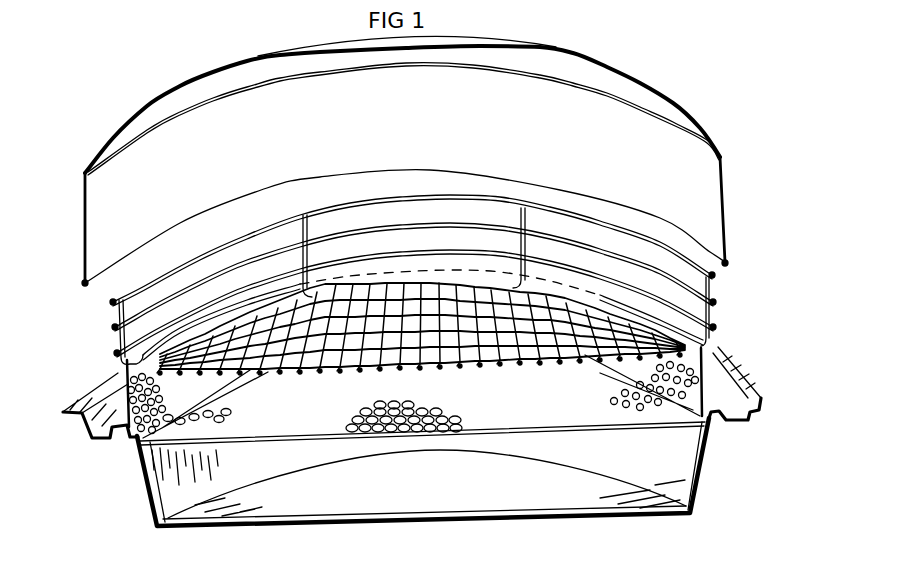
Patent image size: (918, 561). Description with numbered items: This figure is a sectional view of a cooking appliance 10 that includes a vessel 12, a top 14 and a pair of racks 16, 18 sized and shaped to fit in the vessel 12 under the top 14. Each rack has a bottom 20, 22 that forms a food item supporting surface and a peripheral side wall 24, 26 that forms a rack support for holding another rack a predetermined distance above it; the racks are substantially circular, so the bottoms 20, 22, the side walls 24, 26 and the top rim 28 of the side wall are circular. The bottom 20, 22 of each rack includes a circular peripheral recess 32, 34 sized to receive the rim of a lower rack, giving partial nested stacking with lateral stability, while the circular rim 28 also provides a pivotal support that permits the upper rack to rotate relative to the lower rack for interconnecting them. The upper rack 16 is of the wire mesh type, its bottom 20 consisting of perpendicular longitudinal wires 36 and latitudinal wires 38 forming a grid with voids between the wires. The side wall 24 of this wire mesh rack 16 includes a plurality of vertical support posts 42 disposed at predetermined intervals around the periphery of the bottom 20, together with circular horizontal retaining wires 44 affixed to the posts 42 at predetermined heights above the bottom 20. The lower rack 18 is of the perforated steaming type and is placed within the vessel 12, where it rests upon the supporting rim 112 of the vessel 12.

The cooking appliance 10 is at (731, 117).
The vessel 12 is at (713, 447).
The top 14 is at (729, 190).
The upper rack 16 is at (710, 287).
The lower rack 18 is at (722, 347).
The bottom 20 is at (449, 360).
The bottom 22 is at (514, 428).
The peripheral side wall 24 is at (413, 270).
The peripheral side wall 26 is at (423, 354).
The top rim 28 is at (412, 188).
The circular peripheral recess 32 is at (122, 365).
The circular peripheral recess 34 is at (124, 440).
The longitudinal wires 36 is at (281, 370).
The latitudinal wires 38 is at (302, 371).
The vertical support posts 42 is at (305, 192).
The horizontal retaining wires 44 is at (332, 203).
The supporting rim 112 is at (718, 425).